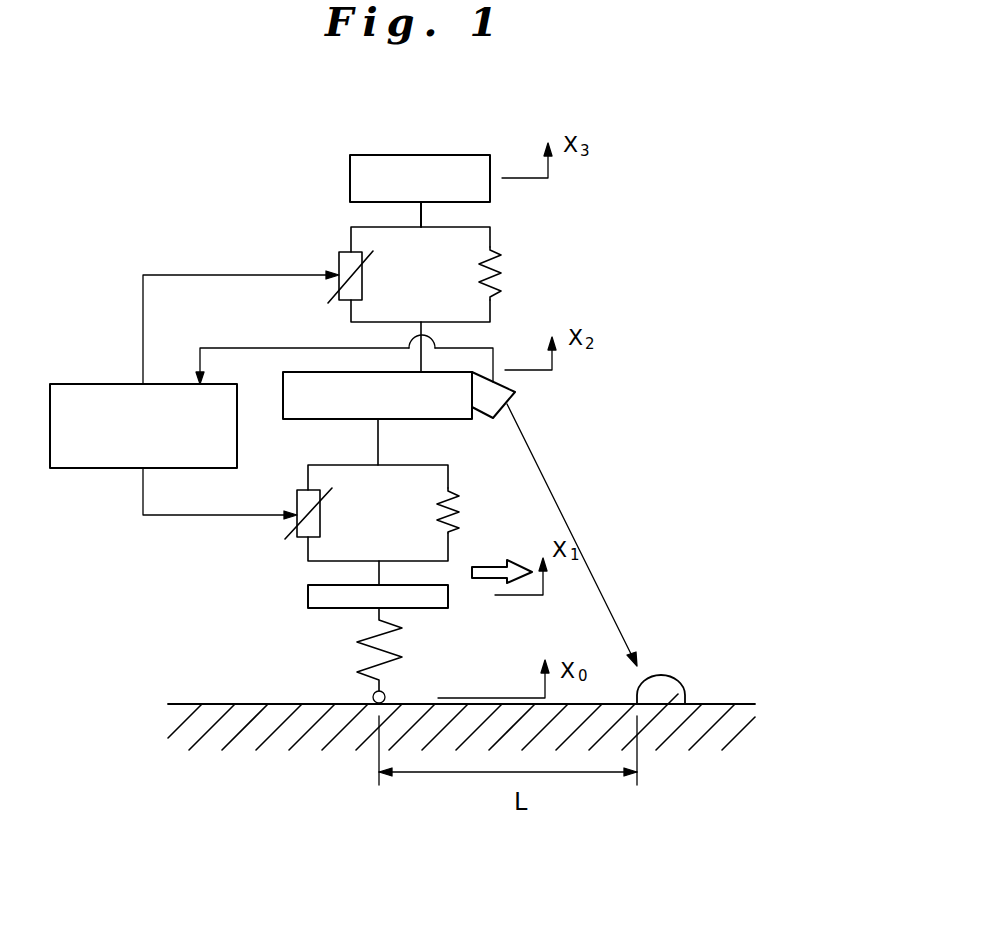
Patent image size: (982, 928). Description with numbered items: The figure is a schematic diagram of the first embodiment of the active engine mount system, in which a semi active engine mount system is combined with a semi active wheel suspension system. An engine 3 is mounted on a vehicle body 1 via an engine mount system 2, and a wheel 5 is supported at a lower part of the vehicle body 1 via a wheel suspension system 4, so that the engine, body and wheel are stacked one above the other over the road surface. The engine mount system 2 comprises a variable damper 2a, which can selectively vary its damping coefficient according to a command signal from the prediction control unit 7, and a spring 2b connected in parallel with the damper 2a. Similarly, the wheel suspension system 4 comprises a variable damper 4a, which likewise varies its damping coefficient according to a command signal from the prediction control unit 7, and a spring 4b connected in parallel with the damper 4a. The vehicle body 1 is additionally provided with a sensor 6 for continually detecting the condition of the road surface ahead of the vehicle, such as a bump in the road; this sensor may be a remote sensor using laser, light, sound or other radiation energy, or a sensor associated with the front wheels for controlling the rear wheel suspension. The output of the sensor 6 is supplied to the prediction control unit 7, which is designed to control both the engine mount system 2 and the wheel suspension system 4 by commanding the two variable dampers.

The vehicle body 1 is at (313, 420).
The engine mount system 2 is at (504, 236).
The variable damper 2a is at (365, 278).
The spring 2b is at (501, 274).
The engine 3 is at (430, 155).
The wheel suspension system 4 is at (303, 565).
The variable damper 4a is at (322, 516).
The spring 4b is at (460, 514).
The wheel 5 is at (292, 620).
The sensor 6 is at (512, 401).
The prediction control unit 7 is at (78, 384).